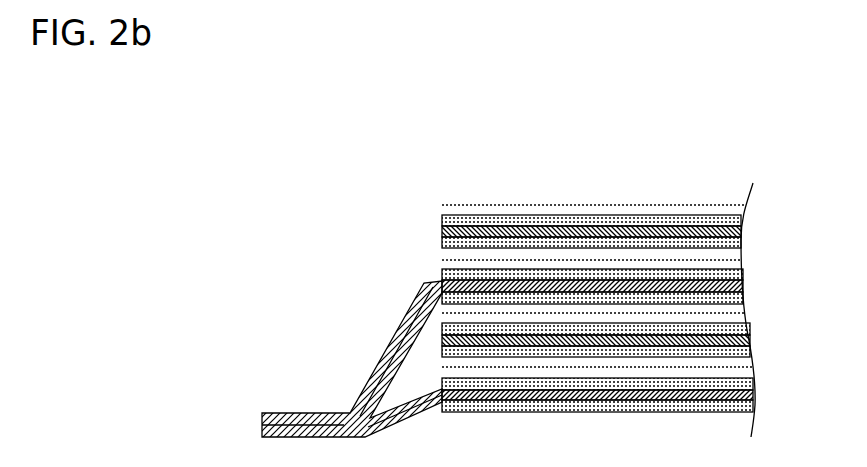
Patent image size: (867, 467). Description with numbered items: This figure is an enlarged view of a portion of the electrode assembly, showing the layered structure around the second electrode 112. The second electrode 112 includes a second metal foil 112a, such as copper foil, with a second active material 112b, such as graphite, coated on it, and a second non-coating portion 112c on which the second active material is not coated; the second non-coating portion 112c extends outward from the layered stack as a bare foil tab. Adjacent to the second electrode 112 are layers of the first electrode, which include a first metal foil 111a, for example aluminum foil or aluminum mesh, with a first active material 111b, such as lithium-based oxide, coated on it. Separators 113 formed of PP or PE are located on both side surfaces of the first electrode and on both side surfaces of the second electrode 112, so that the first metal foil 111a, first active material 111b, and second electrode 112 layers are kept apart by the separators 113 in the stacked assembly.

The first metal foil 111a is at (707, 224).
The first active material 111b is at (648, 170).
The separators 113 is at (606, 199).
The second electrode 112 is at (352, 328).
The second metal foil 112a is at (465, 277).
The second active material 112b is at (555, 226).
The second non-coating portion 112c is at (383, 377).